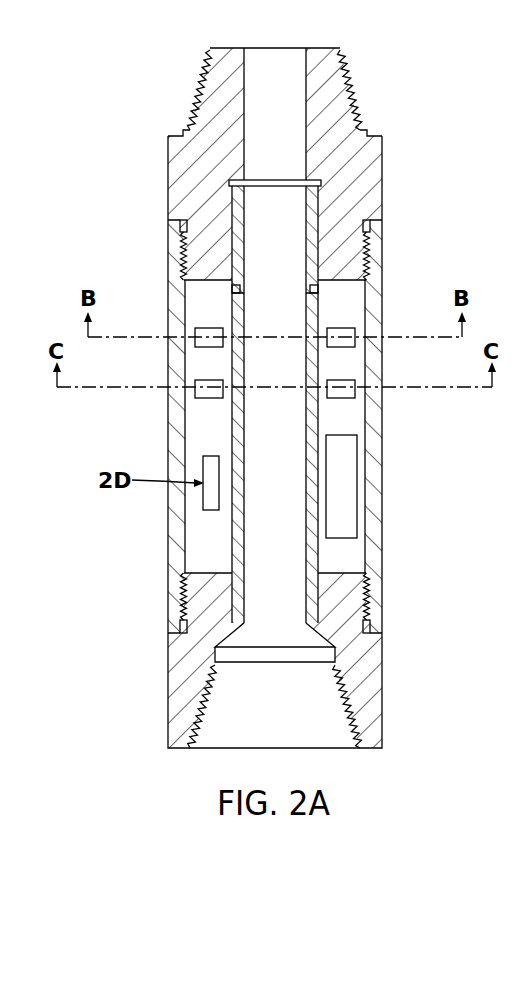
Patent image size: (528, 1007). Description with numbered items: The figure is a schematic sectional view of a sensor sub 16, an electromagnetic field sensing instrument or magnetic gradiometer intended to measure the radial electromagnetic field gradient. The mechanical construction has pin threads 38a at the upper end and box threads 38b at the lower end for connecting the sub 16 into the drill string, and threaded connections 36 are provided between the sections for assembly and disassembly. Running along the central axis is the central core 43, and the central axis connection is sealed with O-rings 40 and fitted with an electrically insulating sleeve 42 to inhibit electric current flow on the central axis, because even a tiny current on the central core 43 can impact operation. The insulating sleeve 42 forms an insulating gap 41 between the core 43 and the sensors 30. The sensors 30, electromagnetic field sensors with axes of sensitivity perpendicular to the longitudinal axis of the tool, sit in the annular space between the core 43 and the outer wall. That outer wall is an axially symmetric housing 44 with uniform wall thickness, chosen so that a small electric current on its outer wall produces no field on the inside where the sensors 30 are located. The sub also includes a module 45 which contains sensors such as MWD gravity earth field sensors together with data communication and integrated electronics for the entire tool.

The sensor sub 16 is at (184, 66).
The pin threads 38a is at (350, 96).
The O-rings 40 is at (229, 183).
The electrically insulating sleeve 42 is at (232, 212).
The threaded connections 36 is at (186, 250).
The insulating gap 41 is at (232, 289).
The sensors 30 is at (350, 328).
The central core 43 is at (262, 437).
The housing 44 is at (383, 487).
The module 45 is at (350, 498).
The box threads 38b is at (348, 703).